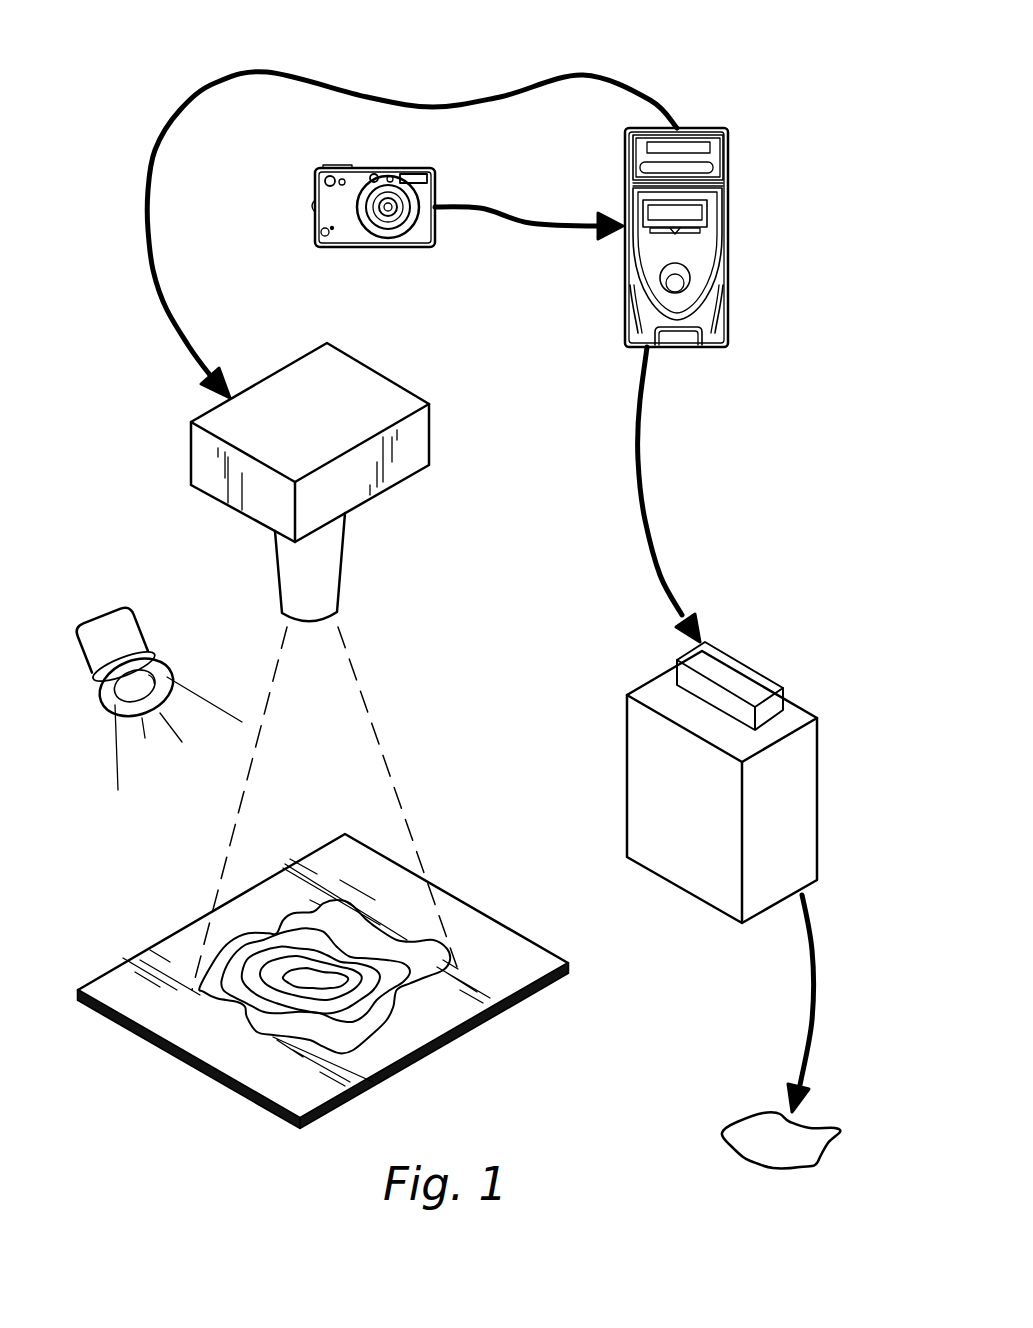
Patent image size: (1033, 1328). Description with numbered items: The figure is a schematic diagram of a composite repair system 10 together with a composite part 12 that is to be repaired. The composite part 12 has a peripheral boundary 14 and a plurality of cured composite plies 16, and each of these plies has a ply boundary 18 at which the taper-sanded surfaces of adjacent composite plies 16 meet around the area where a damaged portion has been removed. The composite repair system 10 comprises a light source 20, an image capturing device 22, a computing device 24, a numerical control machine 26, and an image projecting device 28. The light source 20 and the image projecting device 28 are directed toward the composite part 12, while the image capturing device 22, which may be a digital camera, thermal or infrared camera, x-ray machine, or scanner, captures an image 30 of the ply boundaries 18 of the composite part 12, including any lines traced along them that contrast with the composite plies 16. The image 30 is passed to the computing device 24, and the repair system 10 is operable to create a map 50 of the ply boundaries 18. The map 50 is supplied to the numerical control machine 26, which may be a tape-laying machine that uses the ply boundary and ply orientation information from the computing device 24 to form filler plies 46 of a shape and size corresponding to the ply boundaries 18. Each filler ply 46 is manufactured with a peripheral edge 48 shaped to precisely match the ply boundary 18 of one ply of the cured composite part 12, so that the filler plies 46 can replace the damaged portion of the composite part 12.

The composite repair system 10 is at (97, 77).
The composite part 12 is at (203, 1046).
The peripheral boundary 14 is at (176, 920).
The cured composite plies 16 is at (278, 937).
The ply boundary 18 is at (393, 988).
The light source 20 is at (102, 615).
The image capturing device 22 is at (308, 167).
The computing device 24 is at (728, 250).
The numerical control (NC) machine 26 is at (748, 687).
The image projecting device 28 is at (353, 375).
The image 30 is at (542, 196).
The filler ply 46 is at (760, 1128).
The peripheral edge 48 is at (743, 1157).
The map 50 is at (378, 72).